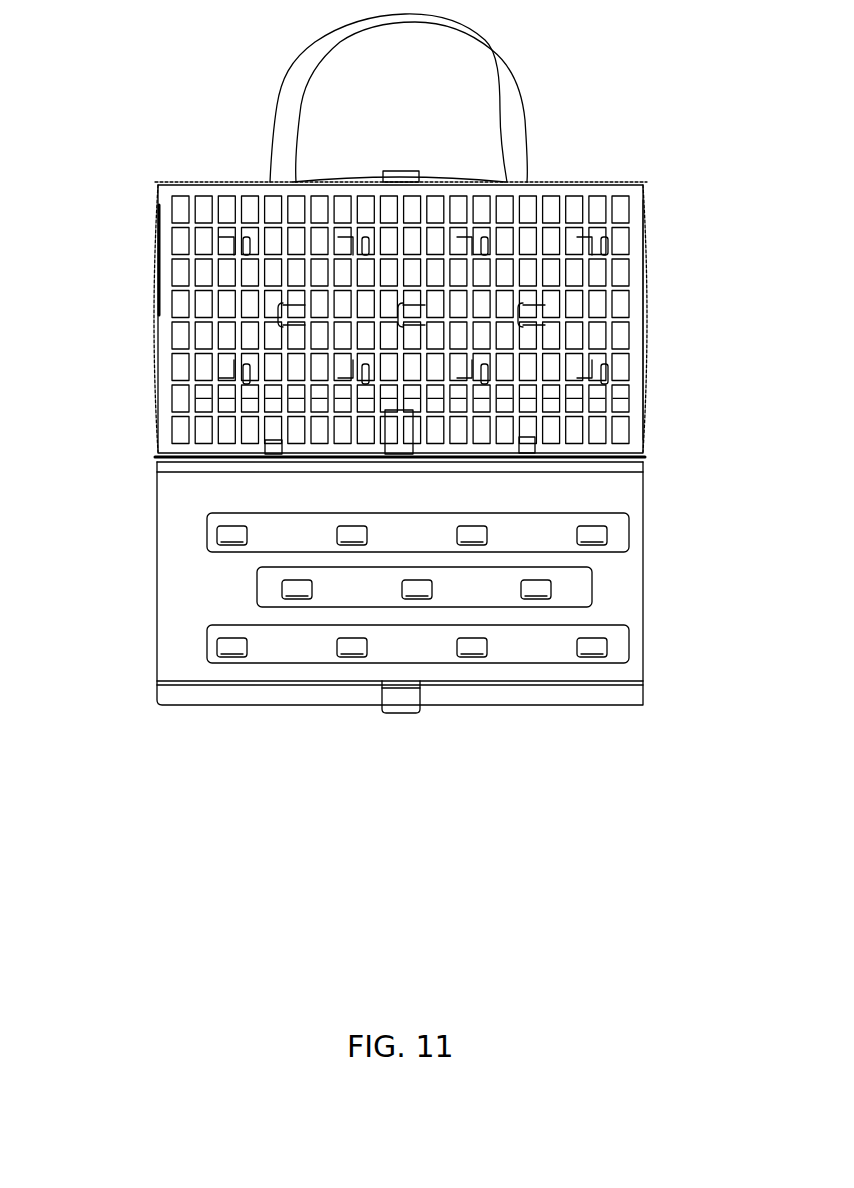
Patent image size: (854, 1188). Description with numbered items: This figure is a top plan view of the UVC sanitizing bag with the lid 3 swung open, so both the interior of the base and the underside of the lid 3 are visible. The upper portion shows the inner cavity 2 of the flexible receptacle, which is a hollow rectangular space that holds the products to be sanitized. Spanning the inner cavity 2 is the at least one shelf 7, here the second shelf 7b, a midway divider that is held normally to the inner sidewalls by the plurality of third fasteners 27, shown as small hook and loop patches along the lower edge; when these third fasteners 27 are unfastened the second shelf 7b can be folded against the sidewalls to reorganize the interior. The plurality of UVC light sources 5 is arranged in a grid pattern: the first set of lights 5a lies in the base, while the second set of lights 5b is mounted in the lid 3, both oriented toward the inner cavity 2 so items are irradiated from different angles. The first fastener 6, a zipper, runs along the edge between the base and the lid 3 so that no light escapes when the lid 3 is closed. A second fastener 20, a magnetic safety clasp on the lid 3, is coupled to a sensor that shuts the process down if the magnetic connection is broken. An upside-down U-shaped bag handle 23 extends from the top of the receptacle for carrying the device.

The bag handle 23 is at (512, 100).
The inner cavity 2 is at (397, 399).
The first fastener 6 is at (645, 190).
The shelf 7 is at (683, 318).
The second shelf 7b is at (632, 303).
The UVC light source 5 is at (380, 429).
The first set of lights 5a is at (223, 249).
The second set of lights 5b is at (618, 658).
The third fastener 27 is at (523, 447).
The lid 3 is at (637, 592).
The second fastener 20 is at (405, 708).